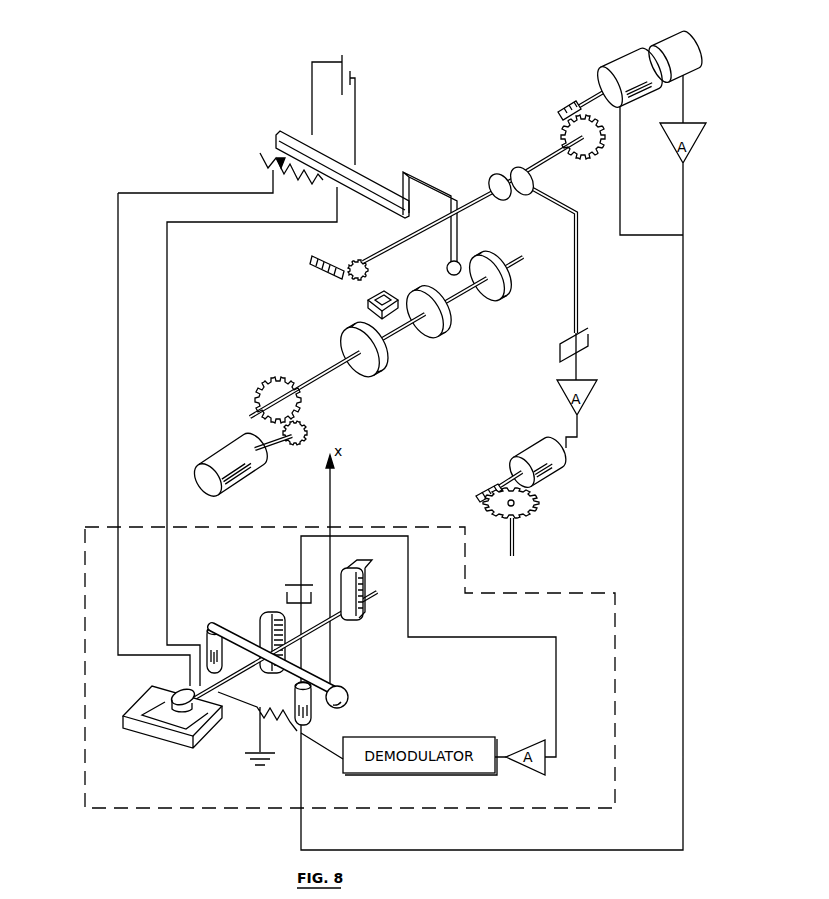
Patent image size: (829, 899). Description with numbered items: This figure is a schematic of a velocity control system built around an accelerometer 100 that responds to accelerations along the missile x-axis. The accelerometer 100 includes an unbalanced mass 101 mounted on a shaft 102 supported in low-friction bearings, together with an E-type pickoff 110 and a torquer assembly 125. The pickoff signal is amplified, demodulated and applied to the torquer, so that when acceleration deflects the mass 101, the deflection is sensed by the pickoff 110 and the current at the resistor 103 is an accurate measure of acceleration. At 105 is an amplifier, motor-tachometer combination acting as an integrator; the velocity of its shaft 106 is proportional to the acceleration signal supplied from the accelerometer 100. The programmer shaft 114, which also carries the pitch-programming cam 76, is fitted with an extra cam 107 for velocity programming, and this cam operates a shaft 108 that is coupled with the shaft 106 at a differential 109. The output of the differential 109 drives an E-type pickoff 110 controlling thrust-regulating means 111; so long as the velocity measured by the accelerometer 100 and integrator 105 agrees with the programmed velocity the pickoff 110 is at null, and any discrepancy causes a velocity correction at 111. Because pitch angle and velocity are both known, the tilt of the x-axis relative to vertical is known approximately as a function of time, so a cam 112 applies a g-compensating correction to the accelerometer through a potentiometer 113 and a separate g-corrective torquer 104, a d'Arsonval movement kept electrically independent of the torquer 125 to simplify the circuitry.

The cam 76 is at (378, 362).
The accelerometer 100 is at (112, 683).
The unbalanced mass 101 is at (346, 693).
The shaft 102 is at (347, 608).
The resistor 103 is at (264, 704).
The g-corrective torquer 104 is at (173, 746).
The amplifier, motor-tachometer combination 105 is at (631, 48).
The shaft 106 is at (585, 96).
The cam 107 is at (433, 333).
The shaft 108 is at (481, 196).
The differential 109 is at (510, 170).
The E-type pickoff 110 is at (594, 333).
The thrust-regulating means 111 is at (546, 491).
The cam 112 is at (496, 298).
The potentiometer 113 is at (306, 125).
The programmer shaft 114 is at (316, 372).
The torquer assembly 125 is at (211, 616).